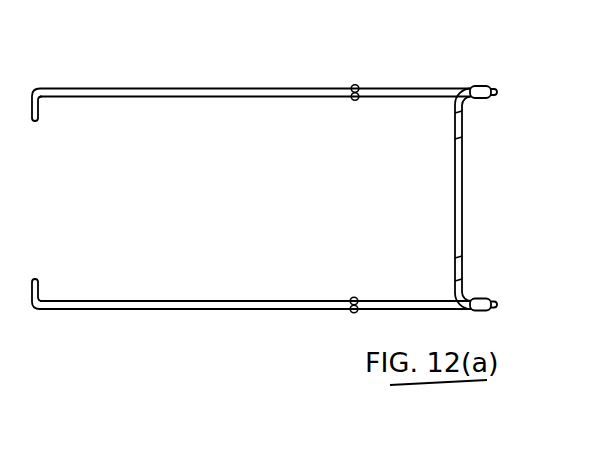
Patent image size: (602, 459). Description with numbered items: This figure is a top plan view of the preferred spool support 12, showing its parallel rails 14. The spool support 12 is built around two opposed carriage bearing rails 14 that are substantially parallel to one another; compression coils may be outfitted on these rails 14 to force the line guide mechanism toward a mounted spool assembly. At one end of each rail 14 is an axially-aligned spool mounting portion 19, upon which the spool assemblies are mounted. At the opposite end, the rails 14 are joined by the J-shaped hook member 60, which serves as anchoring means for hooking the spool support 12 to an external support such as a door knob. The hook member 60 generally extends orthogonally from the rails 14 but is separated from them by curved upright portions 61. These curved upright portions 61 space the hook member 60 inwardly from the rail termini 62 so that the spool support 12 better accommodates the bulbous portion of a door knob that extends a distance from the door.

The spool support 12 is at (541, 107).
The parallel rails 14 is at (233, 88).
The spool mounting portion 19 is at (36, 122).
The J-shaped hook member 60 is at (462, 192).
The curved upright portions 61 is at (478, 86).
The rail termini 62 is at (498, 92).